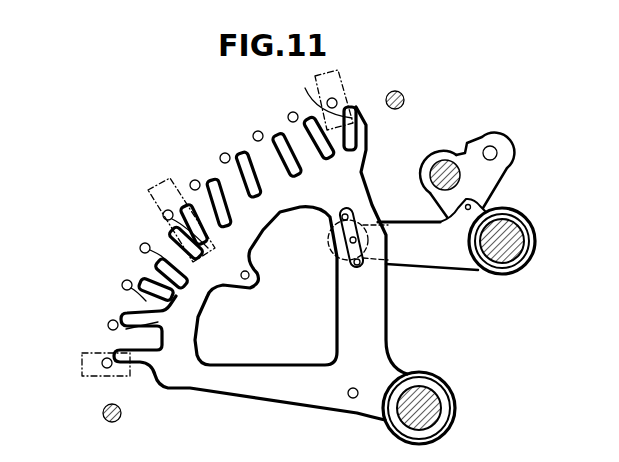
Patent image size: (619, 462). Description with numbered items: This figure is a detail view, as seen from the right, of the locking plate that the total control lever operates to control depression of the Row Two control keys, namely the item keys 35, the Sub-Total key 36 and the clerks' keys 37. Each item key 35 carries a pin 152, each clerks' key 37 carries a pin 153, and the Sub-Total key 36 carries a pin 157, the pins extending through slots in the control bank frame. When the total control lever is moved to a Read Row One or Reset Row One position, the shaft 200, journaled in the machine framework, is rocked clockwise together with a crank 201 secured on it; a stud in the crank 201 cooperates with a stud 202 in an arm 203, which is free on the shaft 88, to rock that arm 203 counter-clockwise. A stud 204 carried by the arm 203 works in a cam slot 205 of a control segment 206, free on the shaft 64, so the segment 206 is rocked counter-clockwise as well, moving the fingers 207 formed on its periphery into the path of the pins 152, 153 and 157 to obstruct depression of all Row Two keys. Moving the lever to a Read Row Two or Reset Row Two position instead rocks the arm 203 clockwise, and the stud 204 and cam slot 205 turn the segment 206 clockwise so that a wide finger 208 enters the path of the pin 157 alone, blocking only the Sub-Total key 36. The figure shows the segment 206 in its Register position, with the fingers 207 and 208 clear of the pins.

The item key 35 is at (330, 72).
The Sub-Total key 36 is at (143, 204).
The clerks' key 37 is at (84, 364).
The shaft 64 is at (435, 403).
The shaft 88 is at (510, 260).
The pin 152 is at (333, 99).
The pin 153 is at (127, 280).
The pin 157 is at (162, 216).
The shaft 200 is at (446, 156).
The crank 201 is at (483, 179).
The stud 202 is at (434, 215).
The arm 203 is at (450, 268).
The stud 204 is at (349, 242).
The cam slot 205 is at (341, 218).
The control segment 206 is at (375, 336).
The fingers 207 is at (306, 90).
The wide finger 208 is at (140, 248).